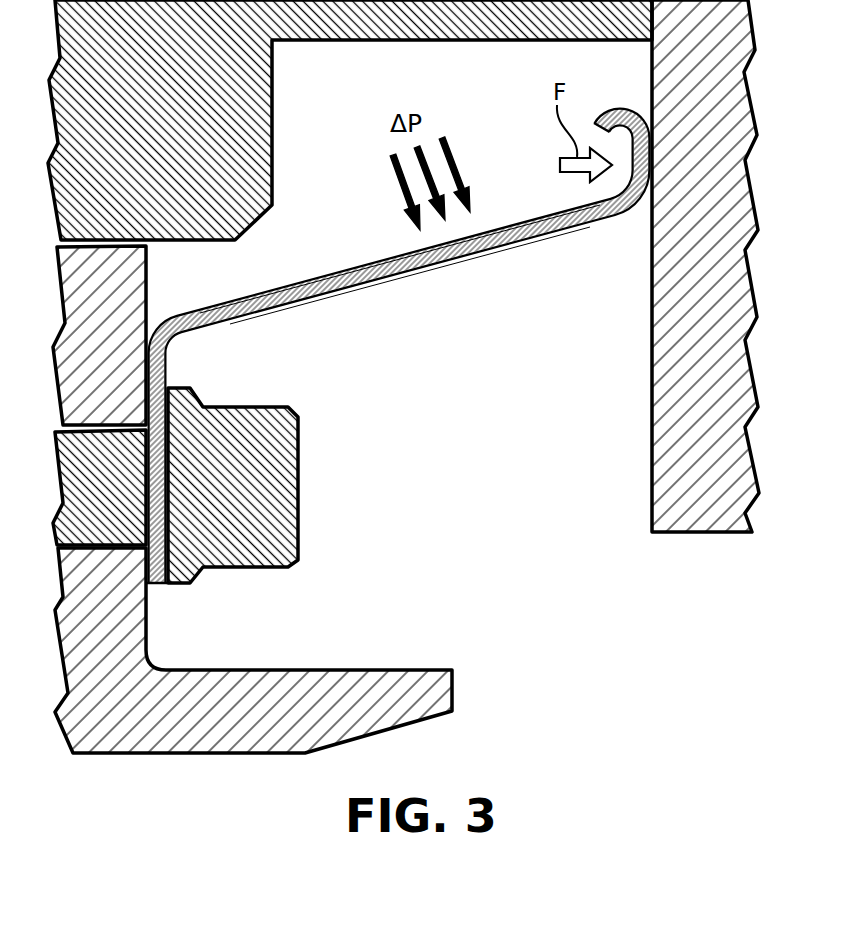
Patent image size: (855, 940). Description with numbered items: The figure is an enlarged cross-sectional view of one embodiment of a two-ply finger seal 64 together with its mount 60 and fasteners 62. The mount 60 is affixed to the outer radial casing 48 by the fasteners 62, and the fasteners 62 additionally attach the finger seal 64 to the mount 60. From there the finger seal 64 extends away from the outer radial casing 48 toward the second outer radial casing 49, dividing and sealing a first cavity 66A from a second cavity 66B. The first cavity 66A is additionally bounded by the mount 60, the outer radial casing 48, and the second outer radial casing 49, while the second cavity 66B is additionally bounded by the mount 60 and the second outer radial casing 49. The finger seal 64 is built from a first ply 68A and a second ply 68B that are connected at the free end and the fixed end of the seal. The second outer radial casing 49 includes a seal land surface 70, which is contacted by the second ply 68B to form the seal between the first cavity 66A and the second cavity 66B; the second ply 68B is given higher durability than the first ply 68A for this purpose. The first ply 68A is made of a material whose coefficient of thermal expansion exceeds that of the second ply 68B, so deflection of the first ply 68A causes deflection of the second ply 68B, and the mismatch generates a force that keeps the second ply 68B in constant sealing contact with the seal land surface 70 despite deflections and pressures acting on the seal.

The outer radial casing 48 is at (177, 165).
The second outer radial casing 49 is at (719, 165).
The mount 60 is at (370, 720).
The fasteners 62 is at (272, 522).
The finger seal 64 is at (352, 343).
The first cavity 66A is at (365, 105).
The second cavity 66B is at (545, 410).
The first ply 68A is at (498, 228).
The second ply 68B is at (541, 236).
The seal land surface 70 is at (651, 498).